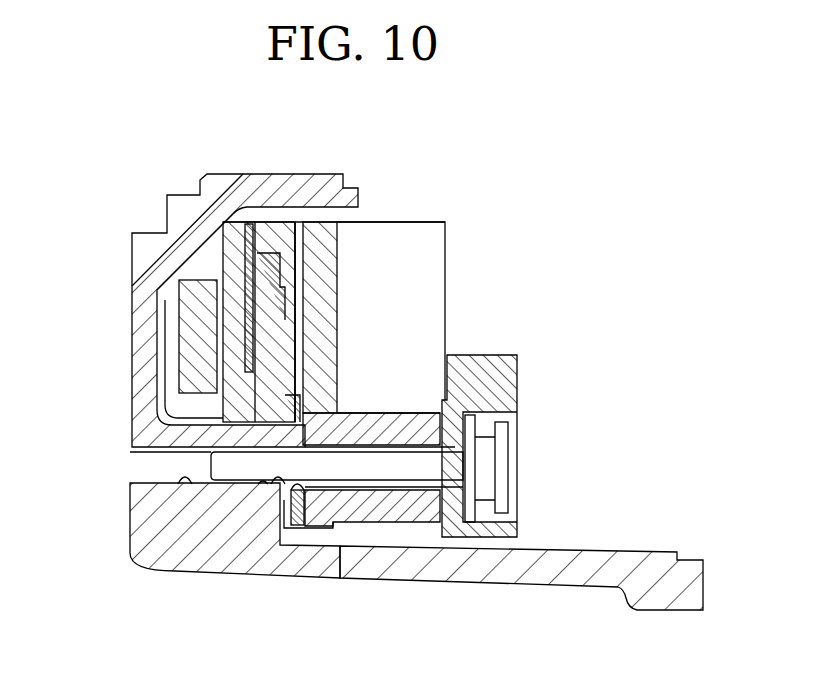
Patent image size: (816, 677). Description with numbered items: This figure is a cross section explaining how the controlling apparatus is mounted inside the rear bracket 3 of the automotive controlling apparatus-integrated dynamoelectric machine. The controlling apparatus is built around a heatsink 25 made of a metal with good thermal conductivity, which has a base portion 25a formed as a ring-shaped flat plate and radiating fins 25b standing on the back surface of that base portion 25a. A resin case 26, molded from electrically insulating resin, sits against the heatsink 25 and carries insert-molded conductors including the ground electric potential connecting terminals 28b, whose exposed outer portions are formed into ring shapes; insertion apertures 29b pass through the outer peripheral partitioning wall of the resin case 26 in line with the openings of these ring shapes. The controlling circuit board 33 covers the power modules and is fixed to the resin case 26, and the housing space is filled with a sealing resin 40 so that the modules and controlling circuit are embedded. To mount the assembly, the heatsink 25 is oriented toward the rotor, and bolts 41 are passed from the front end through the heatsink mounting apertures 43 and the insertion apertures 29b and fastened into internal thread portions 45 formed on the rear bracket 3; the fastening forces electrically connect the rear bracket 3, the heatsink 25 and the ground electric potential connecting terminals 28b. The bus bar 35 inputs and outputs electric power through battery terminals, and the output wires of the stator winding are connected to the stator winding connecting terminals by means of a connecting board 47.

The rear bracket 3 is at (130, 552).
The heatsink 25 is at (330, 222).
The base portion 25a is at (327, 254).
The radiating fins 25b is at (420, 267).
The resin case 26 is at (257, 221).
The ground electric potential connecting terminals 28b is at (278, 478).
The insertion apertures 29b is at (263, 485).
The controlling circuit board 33 is at (223, 248).
The bus bar 35 is at (179, 332).
The sealing resin 40 is at (222, 395).
The bolts 41 is at (503, 466).
The heatsink mounting apertures 43 is at (323, 488).
The internal thread portions 45 is at (185, 485).
The connecting board 47 is at (518, 380).